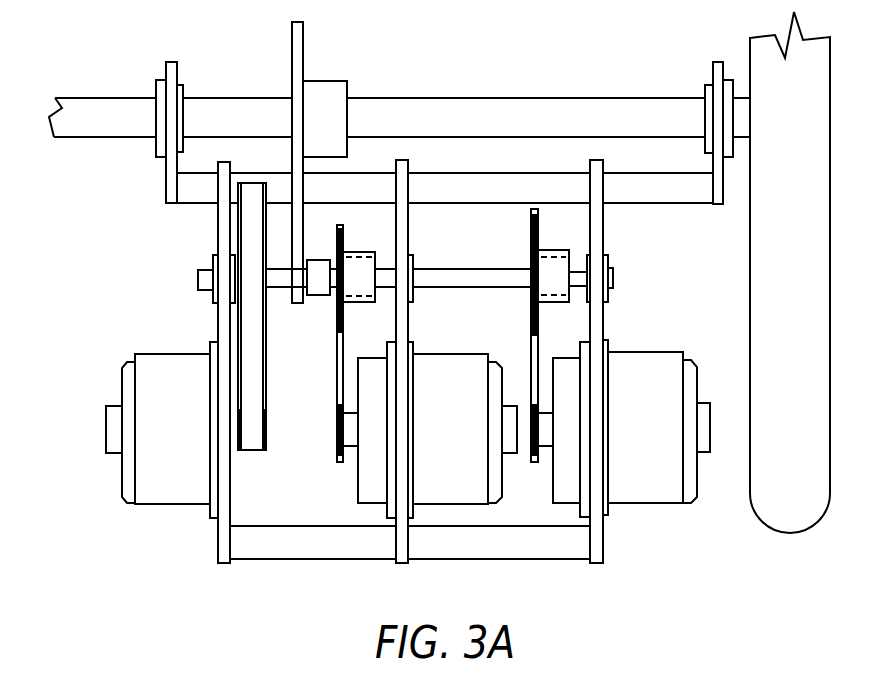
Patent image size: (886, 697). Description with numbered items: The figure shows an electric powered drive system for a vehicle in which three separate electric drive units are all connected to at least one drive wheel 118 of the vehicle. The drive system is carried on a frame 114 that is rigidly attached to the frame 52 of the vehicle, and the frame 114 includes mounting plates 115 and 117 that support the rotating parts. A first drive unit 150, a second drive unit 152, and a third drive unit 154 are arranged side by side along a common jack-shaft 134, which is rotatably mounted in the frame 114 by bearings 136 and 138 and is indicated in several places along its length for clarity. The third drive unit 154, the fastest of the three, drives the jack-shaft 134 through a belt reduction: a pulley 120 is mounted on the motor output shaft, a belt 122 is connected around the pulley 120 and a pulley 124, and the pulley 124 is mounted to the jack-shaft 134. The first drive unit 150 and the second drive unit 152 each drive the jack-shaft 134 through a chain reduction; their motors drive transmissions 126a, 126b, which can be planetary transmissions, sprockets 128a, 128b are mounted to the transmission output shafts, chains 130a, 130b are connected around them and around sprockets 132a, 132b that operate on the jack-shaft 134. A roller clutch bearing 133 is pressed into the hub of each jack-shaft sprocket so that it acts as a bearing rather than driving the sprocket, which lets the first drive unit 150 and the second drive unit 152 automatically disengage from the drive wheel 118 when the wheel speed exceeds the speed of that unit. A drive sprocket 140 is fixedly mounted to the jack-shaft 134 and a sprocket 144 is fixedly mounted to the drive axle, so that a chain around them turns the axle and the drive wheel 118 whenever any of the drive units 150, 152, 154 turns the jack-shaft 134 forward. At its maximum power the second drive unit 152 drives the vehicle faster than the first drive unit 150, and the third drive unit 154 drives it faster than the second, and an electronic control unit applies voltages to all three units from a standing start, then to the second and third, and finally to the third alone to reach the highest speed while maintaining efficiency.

The frame 52 is at (207, 204).
The frame 114 is at (310, 550).
The mounting plate 115 is at (226, 243).
The mounting plate 117 is at (402, 173).
The drive wheel 118 is at (805, 284).
The pulley 120 is at (264, 430).
The belt 122 is at (255, 388).
The pulley 124 is at (243, 310).
The transmission 126a is at (572, 492).
The transmission 126b is at (373, 488).
The sprocket 128a is at (530, 458).
The sprocket 128b is at (340, 435).
The chain 130a is at (532, 353).
The chain 130b is at (340, 392).
The sprocket 132a is at (562, 258).
The sprocket 132b is at (370, 258).
The roller clutch bearing 133 is at (365, 278).
The jack-shaft 134 is at (207, 280).
The bearing 136 is at (417, 267).
The bearing 138 is at (213, 265).
The drive sprocket 140 is at (312, 289).
The sprocket 144 is at (342, 130).
The first drive unit 150 is at (663, 469).
The second drive unit 152 is at (473, 470).
The third drive unit 154 is at (185, 472).